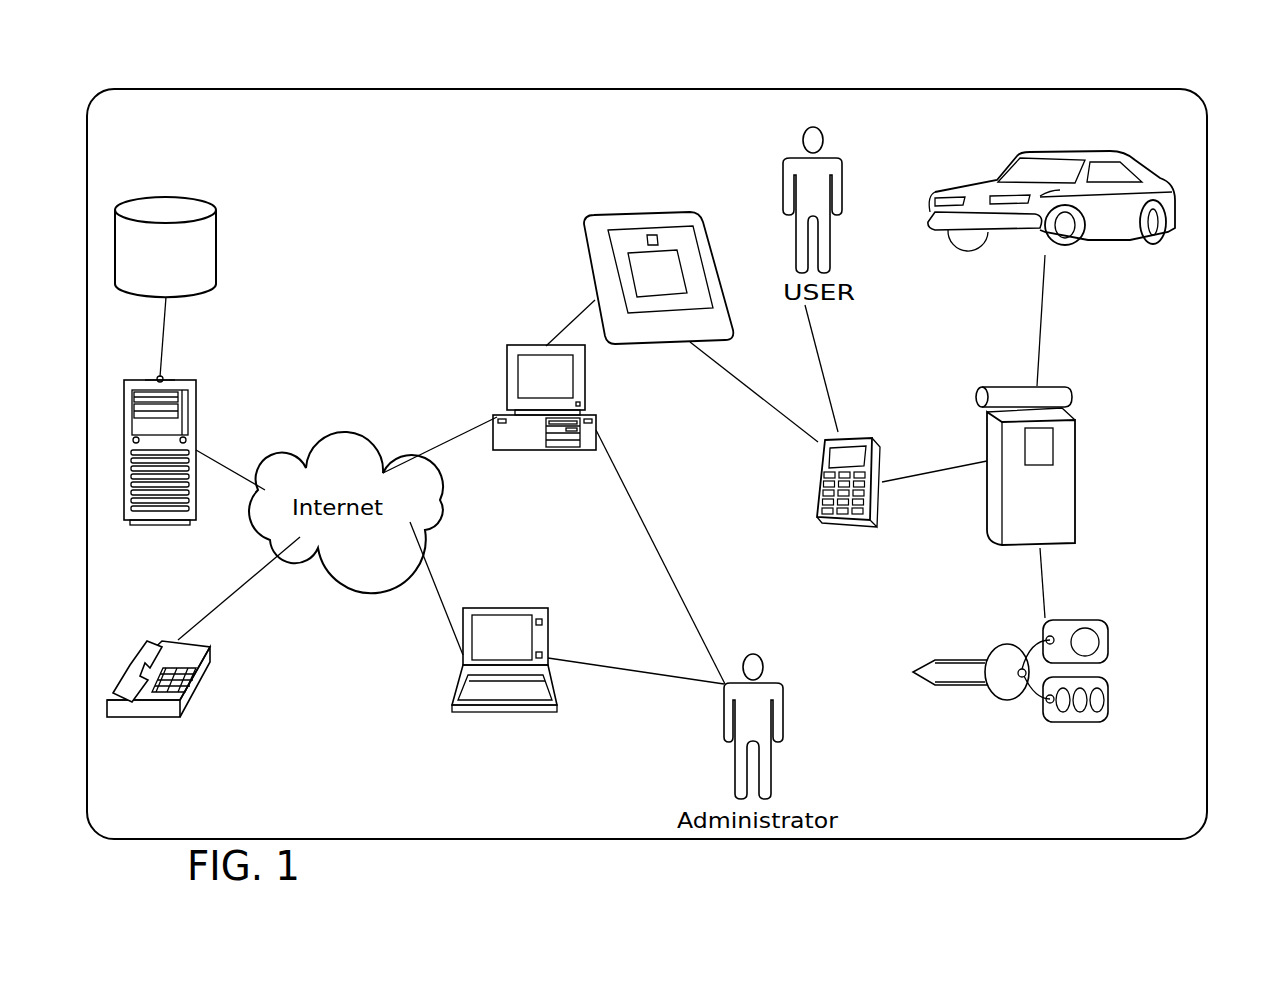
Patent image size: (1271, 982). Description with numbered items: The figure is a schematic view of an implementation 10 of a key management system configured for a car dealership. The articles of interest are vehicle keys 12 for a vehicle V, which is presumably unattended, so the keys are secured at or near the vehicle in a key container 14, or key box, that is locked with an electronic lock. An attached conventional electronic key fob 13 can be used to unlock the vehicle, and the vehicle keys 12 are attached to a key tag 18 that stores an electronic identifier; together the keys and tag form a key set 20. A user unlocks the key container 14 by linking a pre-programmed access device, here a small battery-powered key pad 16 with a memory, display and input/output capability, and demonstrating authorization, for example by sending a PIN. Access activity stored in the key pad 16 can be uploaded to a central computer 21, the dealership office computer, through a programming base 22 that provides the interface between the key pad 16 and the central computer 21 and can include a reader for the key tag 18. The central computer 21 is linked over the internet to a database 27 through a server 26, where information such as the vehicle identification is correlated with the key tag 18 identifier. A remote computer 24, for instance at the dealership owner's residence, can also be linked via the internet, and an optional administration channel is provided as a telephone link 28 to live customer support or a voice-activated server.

The key management system implementation 10 is at (1196, 66).
The database 27 is at (200, 252).
The server 26 is at (196, 418).
The programming base 22 is at (598, 243).
The central computer 21 is at (585, 382).
The vehicle V is at (1014, 165).
The key pad 16 is at (862, 440).
The key container 14 is at (1075, 427).
The key set 20 is at (1054, 693).
The vehicle keys 12 is at (1010, 703).
The electronic key fob 13 is at (1075, 722).
The key tag 18 is at (1110, 660).
The remote computer 24 is at (548, 640).
The telephone link 28 is at (208, 670).